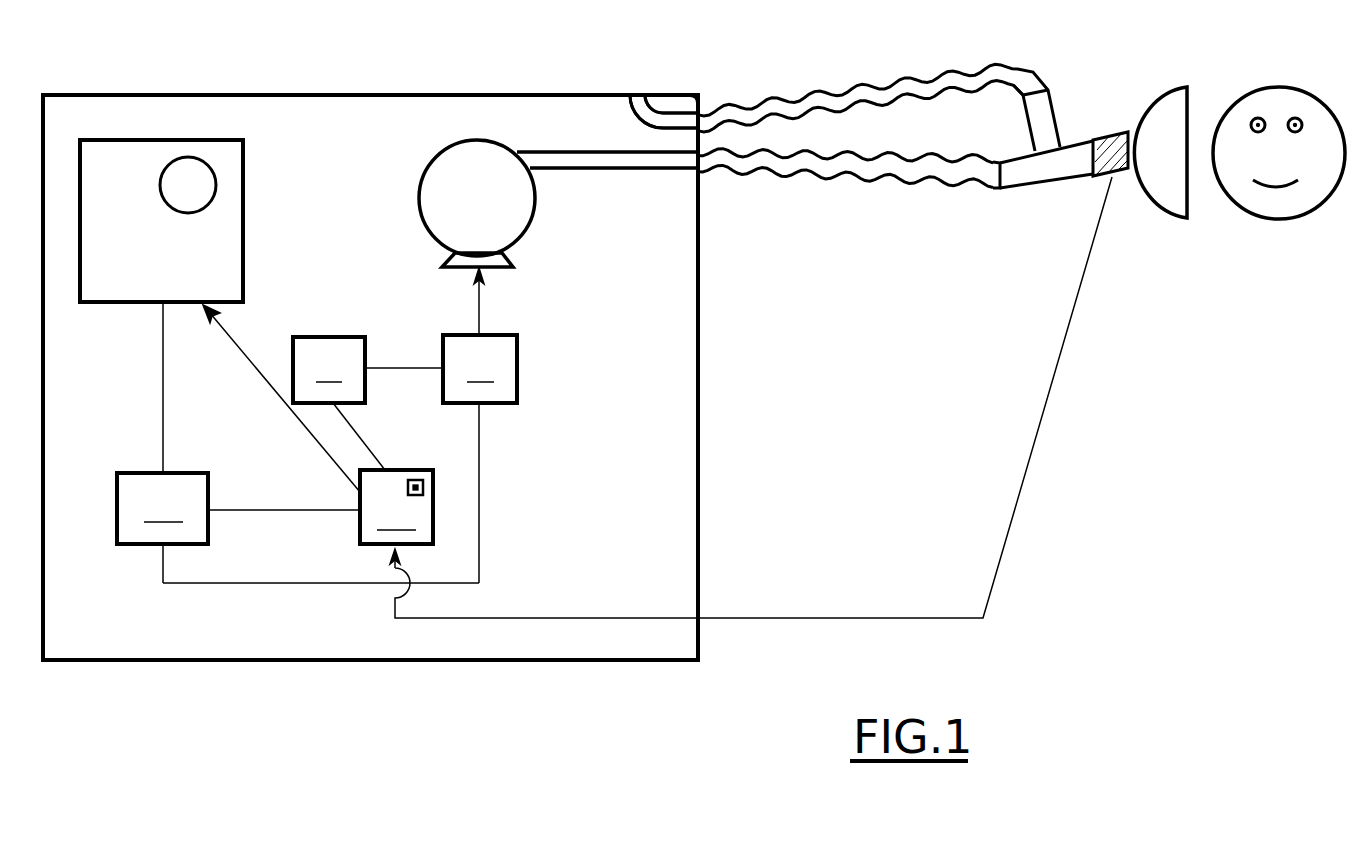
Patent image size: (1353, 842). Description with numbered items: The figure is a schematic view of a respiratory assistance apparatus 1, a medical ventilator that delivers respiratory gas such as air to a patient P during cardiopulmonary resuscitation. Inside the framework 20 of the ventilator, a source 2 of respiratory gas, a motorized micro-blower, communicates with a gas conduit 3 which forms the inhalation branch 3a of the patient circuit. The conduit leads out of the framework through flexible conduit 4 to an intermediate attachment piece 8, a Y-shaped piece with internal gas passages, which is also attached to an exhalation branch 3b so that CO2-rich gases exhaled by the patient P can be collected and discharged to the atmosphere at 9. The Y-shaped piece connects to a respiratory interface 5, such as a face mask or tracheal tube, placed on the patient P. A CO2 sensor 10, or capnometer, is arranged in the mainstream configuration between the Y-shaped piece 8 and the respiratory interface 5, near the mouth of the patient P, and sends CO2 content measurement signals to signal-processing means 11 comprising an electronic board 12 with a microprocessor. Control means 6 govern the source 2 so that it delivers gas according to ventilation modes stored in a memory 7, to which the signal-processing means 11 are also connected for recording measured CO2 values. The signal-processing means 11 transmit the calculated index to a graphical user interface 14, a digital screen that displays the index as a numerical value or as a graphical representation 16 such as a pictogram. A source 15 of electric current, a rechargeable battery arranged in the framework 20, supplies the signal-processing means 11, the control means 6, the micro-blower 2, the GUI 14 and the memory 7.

The respiratory assistance apparatus 1 is at (343, 93).
The source of respiratory gas 2 is at (458, 163).
The gas conduit 3 is at (553, 170).
The inhalation branch 3a is at (633, 165).
The exhalation branch 3b is at (673, 122).
The flexible conduit 4 is at (880, 180).
The respiratory interface 5 is at (1168, 86).
The control means 6 is at (480, 369).
The memory 7 is at (329, 370).
The intermediate attachment piece 8 is at (1062, 172).
The atmosphere discharge 9 is at (633, 100).
The CO2 sensor 10 is at (1105, 132).
The signal-processing means 11 is at (396, 507).
The electronic board 12 is at (408, 480).
The graphical user interface 14 is at (233, 276).
The source of electric current 15 is at (162, 508).
The graphical representation 16 is at (200, 190).
The framework 20 is at (180, 93).
The patient P is at (1278, 86).